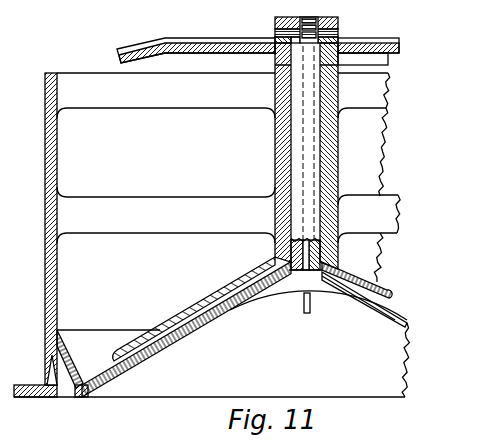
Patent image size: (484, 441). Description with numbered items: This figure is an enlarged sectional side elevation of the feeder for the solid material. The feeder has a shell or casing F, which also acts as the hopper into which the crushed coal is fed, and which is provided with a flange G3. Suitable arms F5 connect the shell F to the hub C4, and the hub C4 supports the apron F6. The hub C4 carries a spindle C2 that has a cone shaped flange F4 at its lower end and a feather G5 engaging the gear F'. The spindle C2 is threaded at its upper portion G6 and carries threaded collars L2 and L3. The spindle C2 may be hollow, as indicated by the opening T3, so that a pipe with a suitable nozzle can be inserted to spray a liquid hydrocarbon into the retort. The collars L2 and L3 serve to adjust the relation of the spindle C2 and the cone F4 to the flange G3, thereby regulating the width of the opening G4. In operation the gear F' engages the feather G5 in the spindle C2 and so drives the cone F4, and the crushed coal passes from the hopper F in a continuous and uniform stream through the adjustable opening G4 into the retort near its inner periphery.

The shell or casing F is at (35, 235).
The gear F' is at (175, 47).
The arms F5 is at (228, 201).
The spindle C2 is at (297, 157).
The threaded collar L2 is at (276, 20).
The threaded collar L3 is at (276, 33).
The threaded upper portion of spindle G6 is at (338, 33).
The feather G5 is at (292, 46).
The opening T3 is at (302, 272).
The hub C4 is at (274, 240).
The cone shaped flange F4 is at (208, 326).
The apron F6 is at (223, 294).
The flange G3 is at (80, 383).
The adjustable opening G4 is at (78, 388).